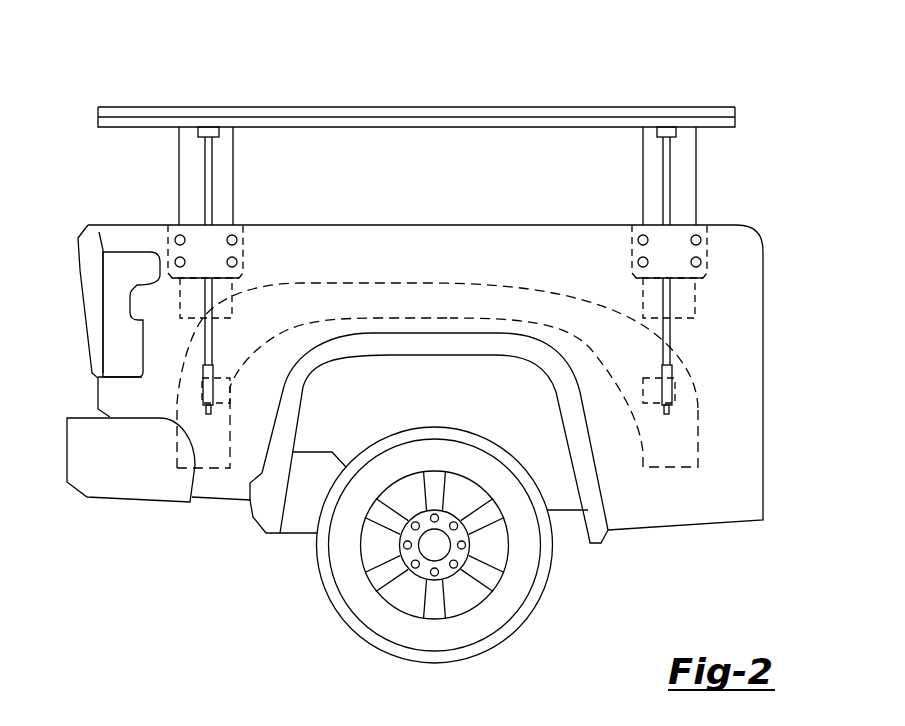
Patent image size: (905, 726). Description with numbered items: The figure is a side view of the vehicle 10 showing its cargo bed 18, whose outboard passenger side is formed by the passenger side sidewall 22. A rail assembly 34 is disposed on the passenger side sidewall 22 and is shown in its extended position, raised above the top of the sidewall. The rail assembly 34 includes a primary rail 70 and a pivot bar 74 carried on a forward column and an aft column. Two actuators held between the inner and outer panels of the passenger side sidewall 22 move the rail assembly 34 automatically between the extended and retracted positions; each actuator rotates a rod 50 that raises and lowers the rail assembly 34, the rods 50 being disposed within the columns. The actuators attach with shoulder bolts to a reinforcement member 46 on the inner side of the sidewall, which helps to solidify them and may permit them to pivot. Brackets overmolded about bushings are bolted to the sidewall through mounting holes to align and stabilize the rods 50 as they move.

The vehicle 10 is at (732, 347).
The cargo bed 18 is at (130, 400).
The passenger side sidewall 22 is at (163, 318).
The rail assembly 34 is at (582, 123).
The reinforcement member 46 is at (240, 388).
The rod 50 is at (677, 377).
The primary rail 70 is at (507, 123).
The pivot bar 74 is at (172, 110).